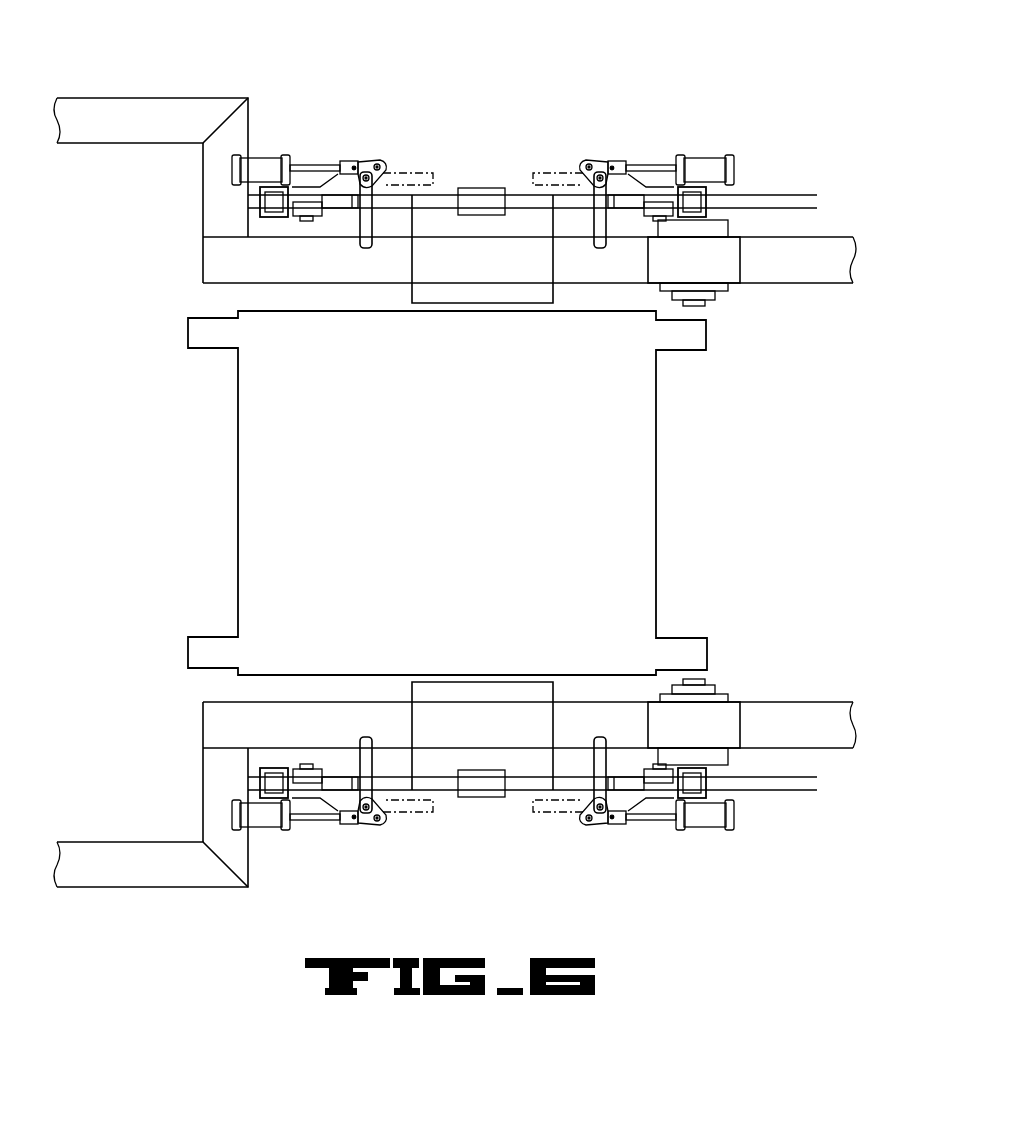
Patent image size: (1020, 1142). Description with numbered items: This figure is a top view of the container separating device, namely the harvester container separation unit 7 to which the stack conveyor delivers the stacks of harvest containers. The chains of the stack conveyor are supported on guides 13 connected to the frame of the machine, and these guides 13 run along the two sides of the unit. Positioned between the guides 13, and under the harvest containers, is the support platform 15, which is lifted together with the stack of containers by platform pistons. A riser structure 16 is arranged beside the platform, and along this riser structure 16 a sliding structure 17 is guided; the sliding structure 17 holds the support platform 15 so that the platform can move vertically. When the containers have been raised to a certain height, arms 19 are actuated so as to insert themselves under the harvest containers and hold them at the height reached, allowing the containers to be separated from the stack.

The harvester container separation unit 7 is at (662, 86).
The guides 13 is at (757, 285).
The support platform 15 is at (466, 510).
The riser structure 16 is at (227, 168).
The sliding structure 17 is at (445, 190).
The arms 19 is at (268, 157).